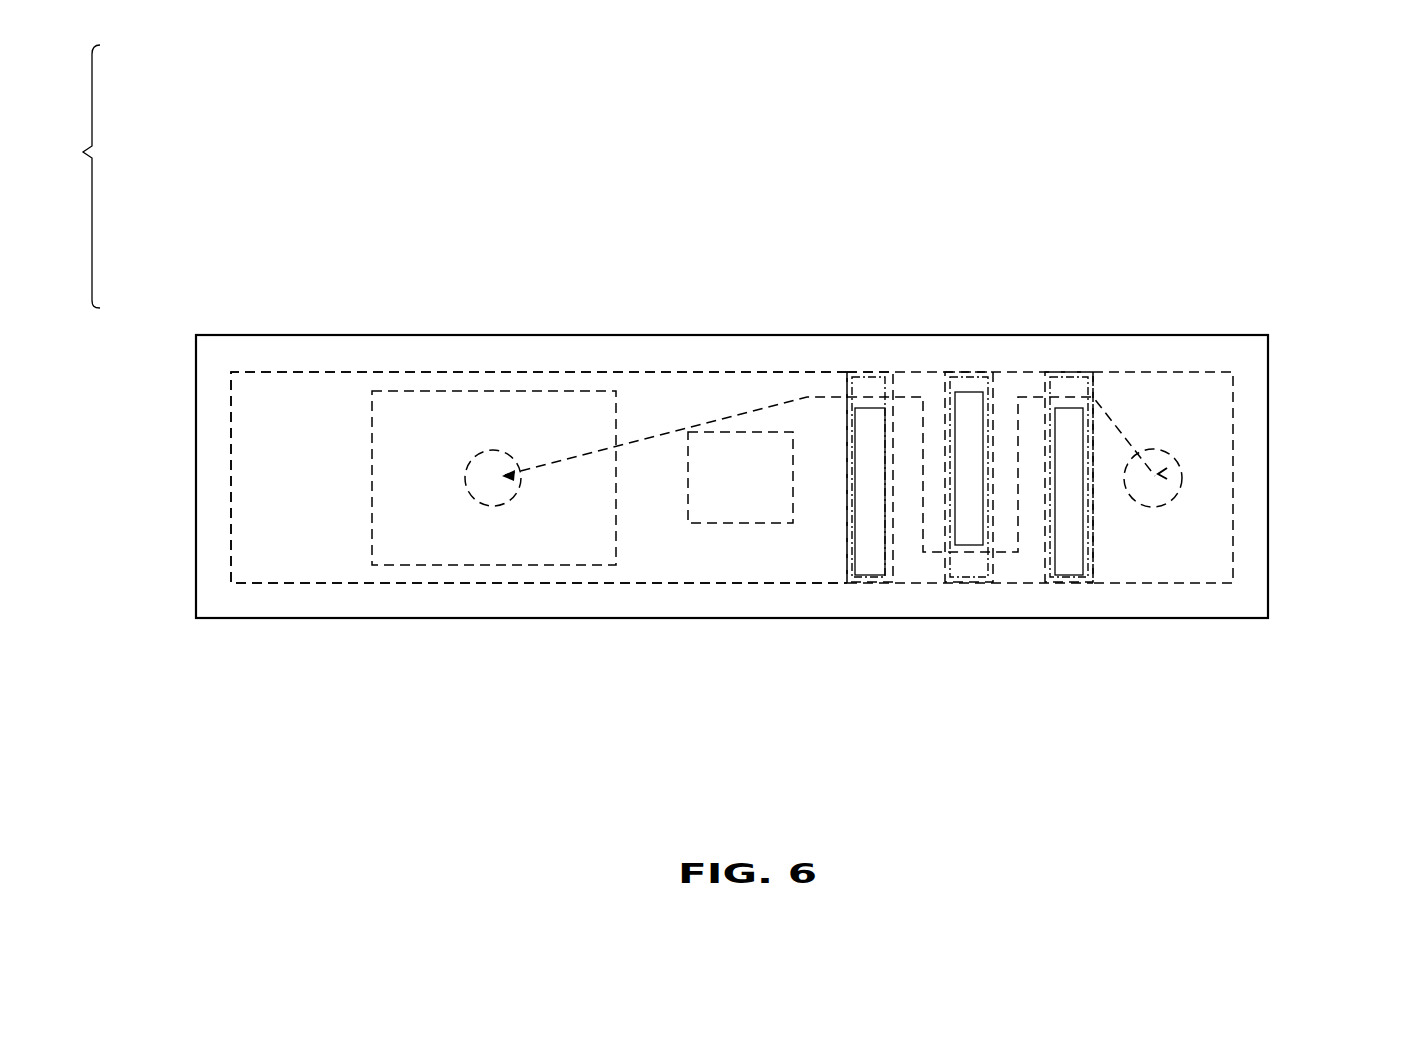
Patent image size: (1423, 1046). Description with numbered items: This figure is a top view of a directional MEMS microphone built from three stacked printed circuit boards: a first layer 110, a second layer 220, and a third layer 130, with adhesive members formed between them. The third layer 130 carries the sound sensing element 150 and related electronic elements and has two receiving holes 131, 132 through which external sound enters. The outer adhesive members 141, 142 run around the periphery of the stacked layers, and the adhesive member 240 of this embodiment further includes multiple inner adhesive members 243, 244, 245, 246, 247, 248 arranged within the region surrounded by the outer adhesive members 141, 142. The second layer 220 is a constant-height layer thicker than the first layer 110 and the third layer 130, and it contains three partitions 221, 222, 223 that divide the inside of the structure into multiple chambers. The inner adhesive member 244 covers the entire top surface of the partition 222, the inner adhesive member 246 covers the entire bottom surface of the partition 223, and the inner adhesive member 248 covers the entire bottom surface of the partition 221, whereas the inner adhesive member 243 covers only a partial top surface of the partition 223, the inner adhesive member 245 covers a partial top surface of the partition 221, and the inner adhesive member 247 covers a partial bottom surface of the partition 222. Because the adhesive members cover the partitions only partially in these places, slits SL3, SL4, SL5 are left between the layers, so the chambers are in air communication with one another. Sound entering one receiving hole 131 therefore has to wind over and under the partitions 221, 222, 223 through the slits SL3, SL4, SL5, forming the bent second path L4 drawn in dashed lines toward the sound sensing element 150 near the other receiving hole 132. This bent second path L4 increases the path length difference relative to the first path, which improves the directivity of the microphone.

The first layer 110 is at (770, 355).
The third layer 130 is at (307, 420).
The receiving hole 131 is at (1182, 473).
The receiving hole 132 is at (500, 492).
The outer adhesive member 141 is at (539, 477).
The outer adhesive member 142 is at (1163, 477).
The sound sensing element 150 is at (493, 415).
The second layer 220 is at (1200, 345).
The partition 221 is at (1090, 397).
The partition 222 is at (997, 395).
The partition 223 is at (893, 385).
The adhesive member 240 is at (89, 175).
The inner adhesive member 243 is at (847, 547).
The inner adhesive member 244 is at (948, 540).
The inner adhesive member 245 is at (1047, 545).
The inner adhesive member 246 is at (870, 573).
The inner adhesive member 247 is at (970, 573).
The inner adhesive member 248 is at (1072, 573).
The slit SL3 is at (1055, 392).
The slit SL4 is at (858, 385).
The slit SL5 is at (984, 557).
The second path L4 is at (834, 473).